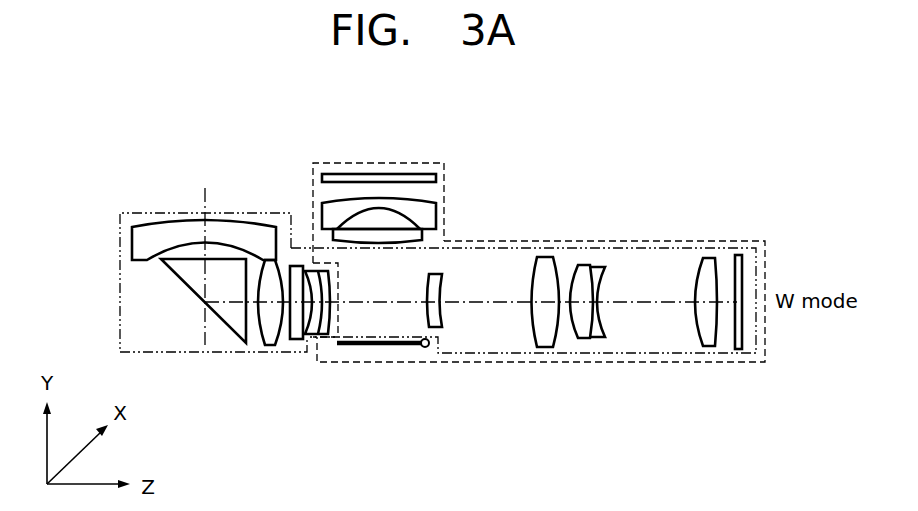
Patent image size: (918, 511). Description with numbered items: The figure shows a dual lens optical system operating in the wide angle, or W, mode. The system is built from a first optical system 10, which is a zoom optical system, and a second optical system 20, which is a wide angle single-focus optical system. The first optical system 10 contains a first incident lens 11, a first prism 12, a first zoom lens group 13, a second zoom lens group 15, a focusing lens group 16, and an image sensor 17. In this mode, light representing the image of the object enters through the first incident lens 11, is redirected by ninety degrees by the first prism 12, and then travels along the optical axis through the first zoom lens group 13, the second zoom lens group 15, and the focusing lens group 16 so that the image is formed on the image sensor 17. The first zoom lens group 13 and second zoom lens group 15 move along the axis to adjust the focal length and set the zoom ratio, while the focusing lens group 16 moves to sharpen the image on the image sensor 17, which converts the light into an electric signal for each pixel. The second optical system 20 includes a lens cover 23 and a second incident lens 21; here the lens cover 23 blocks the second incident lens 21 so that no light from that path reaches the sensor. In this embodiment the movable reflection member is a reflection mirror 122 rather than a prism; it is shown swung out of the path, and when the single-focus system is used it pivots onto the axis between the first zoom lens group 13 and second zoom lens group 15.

The first optical system 10 is at (119, 268).
The first incident lens 11 is at (157, 222).
The first prism 12 is at (220, 318).
The first zoom lens group 13 is at (288, 346).
The reflection mirror 122 is at (378, 346).
The lens cover 23 is at (374, 172).
The second incident lens 21 is at (433, 208).
The second optical system 20 is at (568, 240).
The second zoom lens group 15 is at (582, 340).
The focusing lens group 16 is at (697, 347).
The image sensor 17 is at (738, 349).